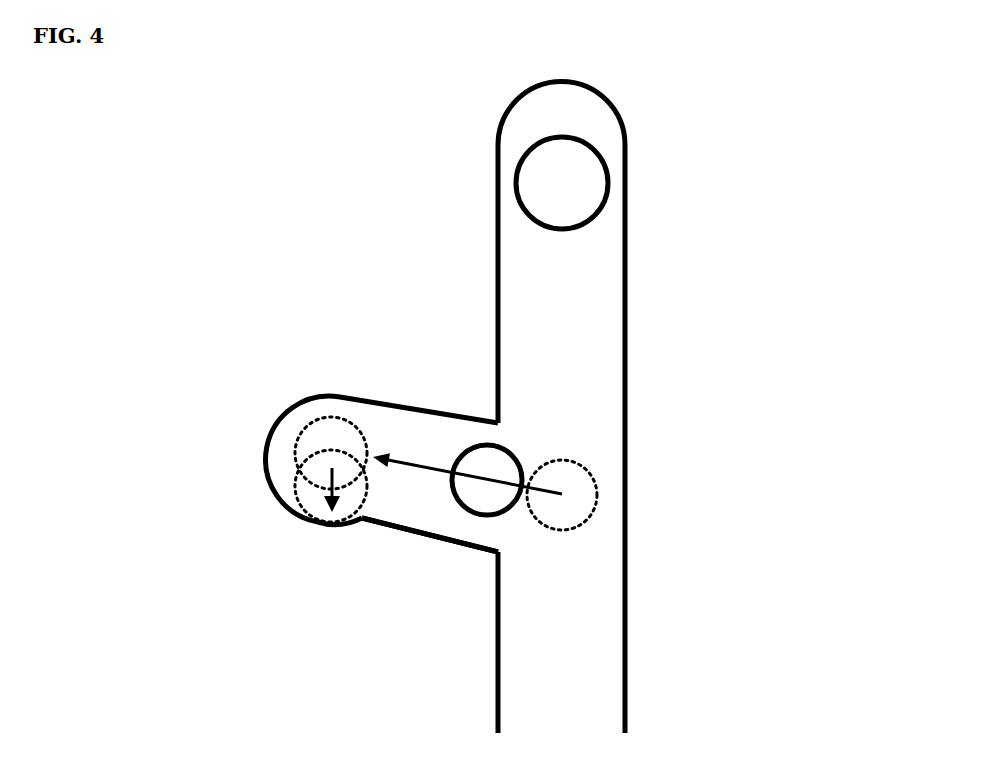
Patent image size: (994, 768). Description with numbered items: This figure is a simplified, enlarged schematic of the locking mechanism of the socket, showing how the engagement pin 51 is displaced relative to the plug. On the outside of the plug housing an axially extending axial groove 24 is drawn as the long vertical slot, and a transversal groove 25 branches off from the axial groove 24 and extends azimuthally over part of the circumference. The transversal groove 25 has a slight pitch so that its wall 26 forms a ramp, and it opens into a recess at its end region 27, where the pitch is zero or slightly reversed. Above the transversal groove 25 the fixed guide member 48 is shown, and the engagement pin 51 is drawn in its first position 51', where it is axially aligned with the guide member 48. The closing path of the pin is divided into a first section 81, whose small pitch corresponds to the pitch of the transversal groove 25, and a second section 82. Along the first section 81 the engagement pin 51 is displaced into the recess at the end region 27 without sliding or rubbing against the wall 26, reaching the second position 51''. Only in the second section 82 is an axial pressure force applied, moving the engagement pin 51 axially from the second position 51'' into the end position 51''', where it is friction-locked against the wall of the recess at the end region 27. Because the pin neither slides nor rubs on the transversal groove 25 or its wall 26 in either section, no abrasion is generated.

The axial groove 24 is at (583, 672).
The guide member 48 is at (588, 190).
The first section of the closing path 81 is at (437, 462).
The second section of the closing path 82 is at (372, 492).
The transversal groove 25 is at (437, 518).
The wall of the transversal groove 26 is at (408, 530).
The end region of the transversal groove 27 is at (331, 530).
The engagement pin 51 is at (639, 509).
The first position of the engagement pin 51' is at (720, 465).
The second position of the engagement pin 51'' is at (206, 340).
The end position of the engagement pin 51''' is at (206, 411).